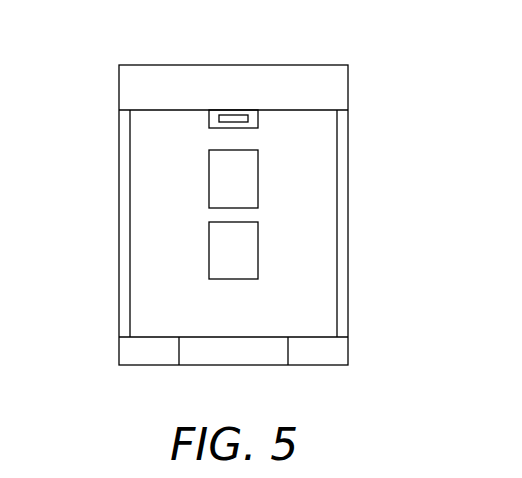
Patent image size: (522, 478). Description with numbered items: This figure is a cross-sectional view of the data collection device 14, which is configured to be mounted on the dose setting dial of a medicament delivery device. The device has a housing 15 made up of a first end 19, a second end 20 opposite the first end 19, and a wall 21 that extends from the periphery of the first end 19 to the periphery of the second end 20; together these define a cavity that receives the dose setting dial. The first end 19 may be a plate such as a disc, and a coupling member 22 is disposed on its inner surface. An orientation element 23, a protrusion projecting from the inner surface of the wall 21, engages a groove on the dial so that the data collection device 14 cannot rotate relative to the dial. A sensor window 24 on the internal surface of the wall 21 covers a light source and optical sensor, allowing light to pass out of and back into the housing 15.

The data collection device 14 is at (106, 60).
The first end 19 is at (233, 77).
The second end 20 is at (148, 356).
The housing 15 is at (348, 139).
The wall 21 is at (348, 262).
The coupling member 22 is at (211, 119).
The orientation element 23 is at (245, 182).
The sensor window 24 is at (223, 253).